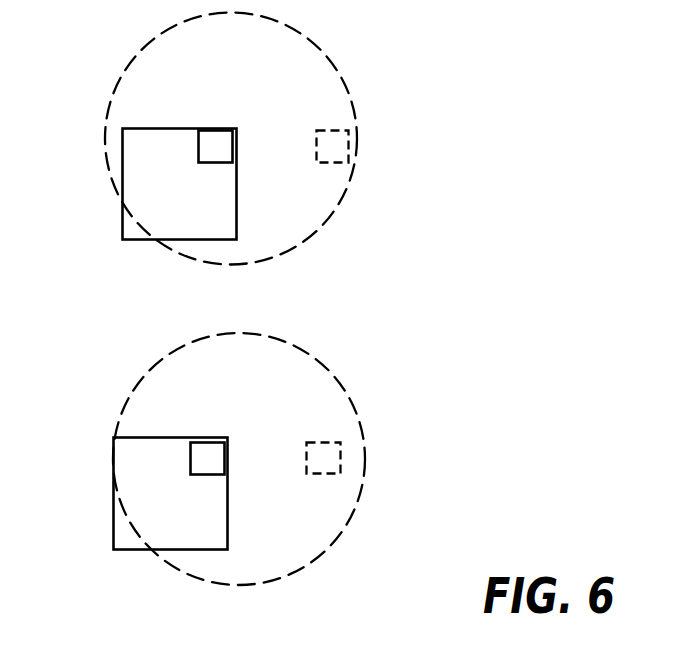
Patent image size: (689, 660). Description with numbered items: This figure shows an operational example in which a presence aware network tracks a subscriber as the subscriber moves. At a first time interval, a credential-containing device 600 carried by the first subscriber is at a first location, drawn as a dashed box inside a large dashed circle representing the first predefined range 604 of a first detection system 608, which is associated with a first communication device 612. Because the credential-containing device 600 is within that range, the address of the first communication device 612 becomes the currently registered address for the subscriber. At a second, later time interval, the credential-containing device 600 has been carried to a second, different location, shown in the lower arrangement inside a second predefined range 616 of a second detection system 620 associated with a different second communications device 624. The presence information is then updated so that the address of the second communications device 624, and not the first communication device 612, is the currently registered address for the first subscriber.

The credential-containing device 600 is at (332, 130).
The first predefined range 604 is at (338, 213).
The first detection system 608 is at (220, 140).
The first communication device 612 is at (237, 197).
The second predefined range 616 is at (327, 548).
The second detection system 620 is at (190, 455).
The second communications device 624 is at (113, 540).